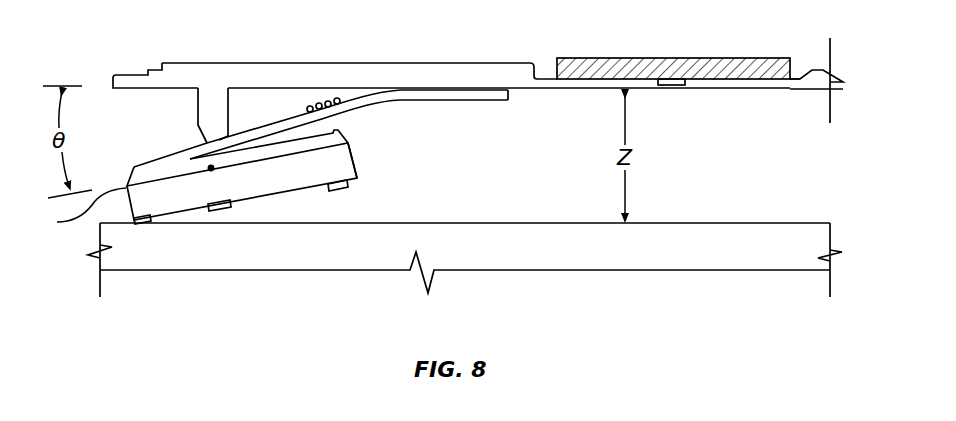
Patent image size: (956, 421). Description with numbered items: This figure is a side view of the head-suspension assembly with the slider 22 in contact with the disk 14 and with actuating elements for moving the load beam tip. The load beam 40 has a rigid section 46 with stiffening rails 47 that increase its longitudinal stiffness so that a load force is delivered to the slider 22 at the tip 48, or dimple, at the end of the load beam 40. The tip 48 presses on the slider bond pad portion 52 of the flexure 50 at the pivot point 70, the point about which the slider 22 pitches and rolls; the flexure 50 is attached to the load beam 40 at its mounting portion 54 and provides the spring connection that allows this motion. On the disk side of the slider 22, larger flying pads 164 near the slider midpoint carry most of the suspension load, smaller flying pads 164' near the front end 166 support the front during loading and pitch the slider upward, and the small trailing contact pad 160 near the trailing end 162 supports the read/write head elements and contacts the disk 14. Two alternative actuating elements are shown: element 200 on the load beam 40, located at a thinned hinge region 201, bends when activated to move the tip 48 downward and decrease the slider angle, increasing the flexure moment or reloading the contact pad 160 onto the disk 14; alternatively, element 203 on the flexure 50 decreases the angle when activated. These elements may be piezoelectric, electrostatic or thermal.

The disk 14 is at (744, 236).
The slider 22 is at (349, 155).
The load beam 40 is at (800, 89).
The rigid section 46 is at (148, 70).
The stiffening rails 47 is at (318, 68).
The tip 48 is at (200, 120).
The flexure 50 is at (293, 119).
The slider bond pad portion 52 is at (337, 128).
The mounting portion 54 is at (447, 99).
The pivot point 70 is at (211, 168).
The trailing contact pad 160 is at (149, 224).
The trailing end 162 is at (69, 212).
The flying pads 164 is at (257, 227).
The flying pads 164' is at (375, 199).
The front end 166 is at (358, 172).
The actuating element 200 is at (670, 57).
The hinge region 201 is at (673, 86).
The actuating element 203 is at (333, 99).